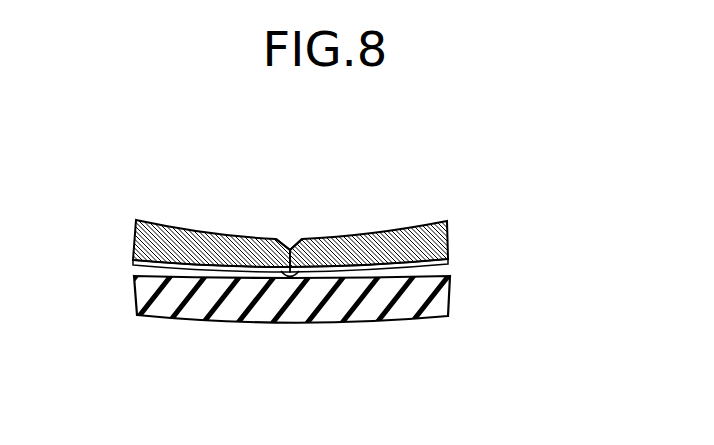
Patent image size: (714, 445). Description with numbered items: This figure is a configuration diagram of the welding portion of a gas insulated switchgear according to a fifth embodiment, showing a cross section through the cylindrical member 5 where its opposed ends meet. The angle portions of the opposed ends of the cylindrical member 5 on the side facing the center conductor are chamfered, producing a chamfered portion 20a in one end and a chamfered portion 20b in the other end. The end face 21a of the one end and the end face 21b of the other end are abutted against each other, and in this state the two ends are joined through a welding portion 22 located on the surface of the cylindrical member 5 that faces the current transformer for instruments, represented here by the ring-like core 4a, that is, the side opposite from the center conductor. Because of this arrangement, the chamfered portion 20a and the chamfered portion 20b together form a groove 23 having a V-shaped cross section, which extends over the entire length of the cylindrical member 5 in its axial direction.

The ring-like core 4a is at (402, 305).
The cylindrical member 5 is at (163, 242).
The chamfered portion 20a is at (288, 246).
The chamfered portion 20b is at (293, 246).
The groove 23 is at (289, 248).
The end face 21a is at (292, 268).
The end face 21b is at (300, 268).
The welding portion 22 is at (300, 277).